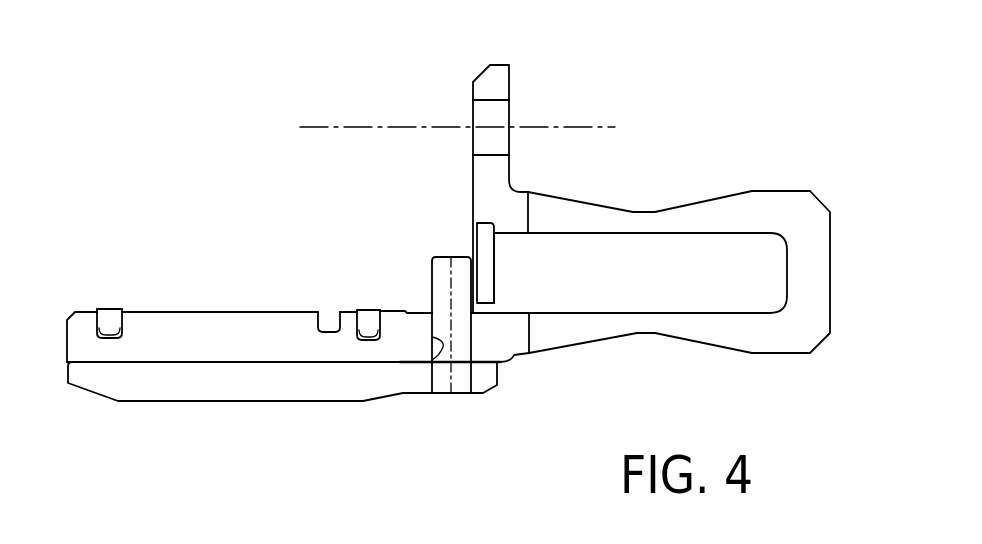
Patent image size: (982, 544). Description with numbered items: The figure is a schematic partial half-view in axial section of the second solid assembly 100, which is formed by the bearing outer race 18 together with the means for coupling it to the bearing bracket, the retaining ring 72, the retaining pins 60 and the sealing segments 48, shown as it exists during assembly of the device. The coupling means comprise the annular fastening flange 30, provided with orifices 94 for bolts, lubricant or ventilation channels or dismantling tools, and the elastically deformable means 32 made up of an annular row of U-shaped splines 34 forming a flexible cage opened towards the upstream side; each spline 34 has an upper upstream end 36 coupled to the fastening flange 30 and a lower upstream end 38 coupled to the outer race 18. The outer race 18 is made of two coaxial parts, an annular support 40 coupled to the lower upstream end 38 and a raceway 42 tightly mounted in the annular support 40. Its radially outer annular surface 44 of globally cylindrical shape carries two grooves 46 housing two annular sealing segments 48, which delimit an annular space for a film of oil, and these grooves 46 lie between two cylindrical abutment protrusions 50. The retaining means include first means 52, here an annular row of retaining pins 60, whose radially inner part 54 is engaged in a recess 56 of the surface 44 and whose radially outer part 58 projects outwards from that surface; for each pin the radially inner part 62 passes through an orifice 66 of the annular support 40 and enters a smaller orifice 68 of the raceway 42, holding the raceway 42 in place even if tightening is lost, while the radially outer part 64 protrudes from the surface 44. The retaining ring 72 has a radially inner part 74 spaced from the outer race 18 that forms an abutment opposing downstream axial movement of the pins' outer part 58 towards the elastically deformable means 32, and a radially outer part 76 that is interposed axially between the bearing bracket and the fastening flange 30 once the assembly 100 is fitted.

The second solid assembly 100 is at (650, 224).
The annular fastening flange 30 is at (488, 178).
The orifices of the fastening flange 94 is at (490, 102).
The elastically deformable means 32 is at (650, 256).
The splines 34 is at (705, 200).
The upper upstream end 36 is at (518, 204).
The lower upstream end 38 is at (528, 340).
The radially outer part of the retaining ring 76 is at (484, 247).
The retaining ring 72 is at (497, 252).
The radially inner part of the retaining ring 74 is at (485, 280).
The outer race 18 is at (273, 370).
The annular support 40 is at (276, 359).
The raceway 42 is at (108, 380).
The radially outer annular surface 44 is at (236, 311).
The grooves 46 is at (118, 326).
The annular sealing segments 48 is at (110, 317).
The cylindrical protrusions 50 is at (88, 312).
The first means 52 is at (397, 254).
The retaining pins 60 is at (423, 259).
The radially outer part of the first means 58 is at (384, 309).
The radially outer part of the retaining pin 64 is at (442, 278).
The radially inner part of the first means 54 is at (512, 368).
The radially inner part of the retaining pin 62 is at (462, 337).
The recess 56 is at (422, 438).
The orifice of the annular support 66 is at (432, 362).
The orifice of the raceway 68 is at (443, 378).